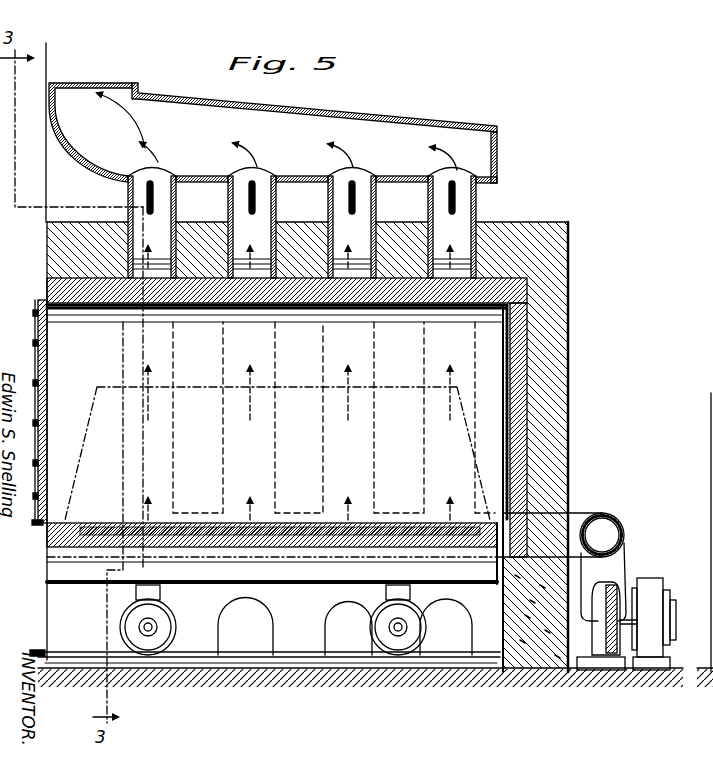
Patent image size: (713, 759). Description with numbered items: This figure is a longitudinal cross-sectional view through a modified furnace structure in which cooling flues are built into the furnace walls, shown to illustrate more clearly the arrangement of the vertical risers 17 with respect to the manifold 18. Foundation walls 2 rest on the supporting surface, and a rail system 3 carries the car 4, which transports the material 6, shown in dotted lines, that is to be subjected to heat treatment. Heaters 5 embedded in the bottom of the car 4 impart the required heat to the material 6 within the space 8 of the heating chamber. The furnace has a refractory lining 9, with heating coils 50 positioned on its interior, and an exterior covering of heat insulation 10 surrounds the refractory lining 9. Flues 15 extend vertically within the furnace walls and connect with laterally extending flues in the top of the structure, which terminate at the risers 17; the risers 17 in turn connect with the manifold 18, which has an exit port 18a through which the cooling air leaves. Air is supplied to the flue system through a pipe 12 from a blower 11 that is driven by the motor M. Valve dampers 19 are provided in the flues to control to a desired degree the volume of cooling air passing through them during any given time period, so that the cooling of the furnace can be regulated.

The foundation walls 2 is at (313, 634).
The rail system 3 is at (300, 663).
The car 4 is at (298, 582).
The heaters 5 is at (234, 523).
The material 6 is at (184, 385).
The heating chamber space 8 is at (53, 367).
The refractory lining 9 is at (526, 302).
The heat insulation 10 is at (517, 234).
The blower 11 is at (625, 590).
The pipe 12 is at (600, 516).
The flues 15 is at (153, 480).
The risers 17 is at (124, 193).
The manifold 18 is at (316, 126).
The exit port 18a is at (115, 86).
The valve dampers 19 is at (254, 186).
The heating coils 50 is at (403, 307).
The motor M is at (650, 587).